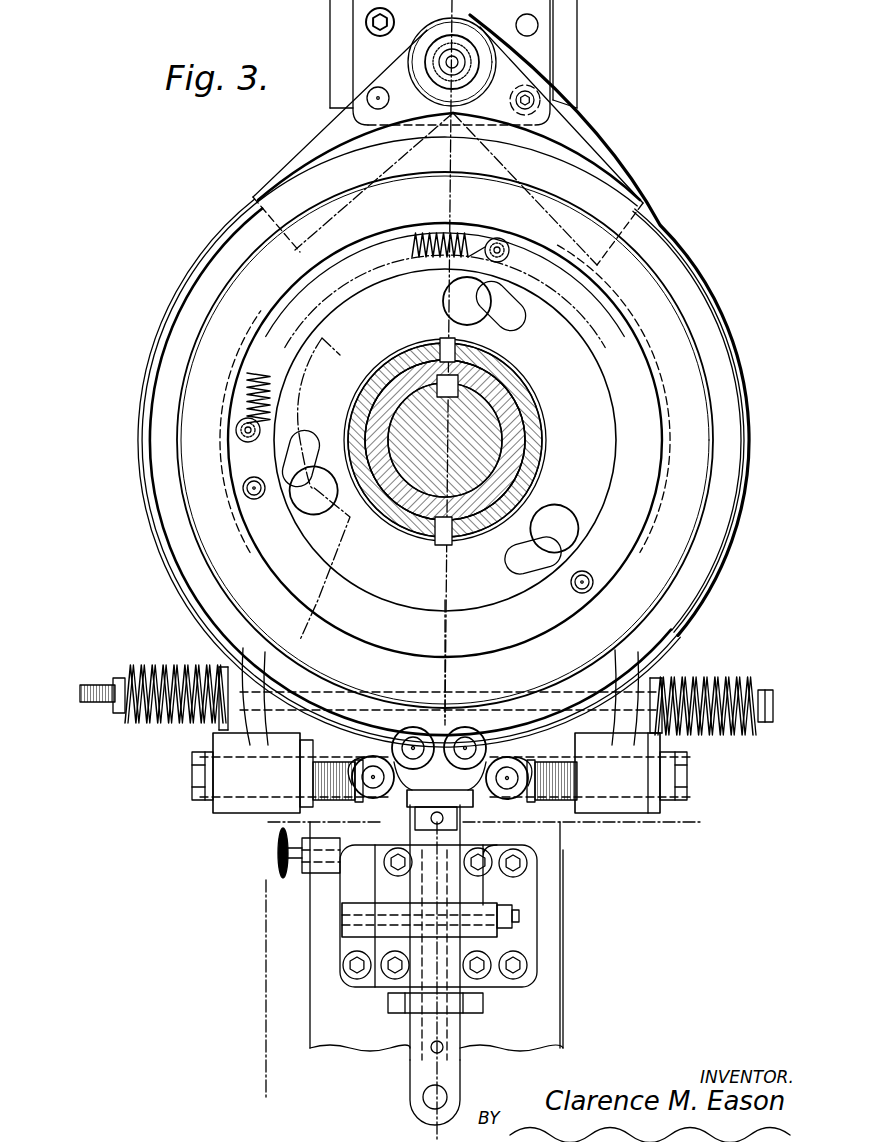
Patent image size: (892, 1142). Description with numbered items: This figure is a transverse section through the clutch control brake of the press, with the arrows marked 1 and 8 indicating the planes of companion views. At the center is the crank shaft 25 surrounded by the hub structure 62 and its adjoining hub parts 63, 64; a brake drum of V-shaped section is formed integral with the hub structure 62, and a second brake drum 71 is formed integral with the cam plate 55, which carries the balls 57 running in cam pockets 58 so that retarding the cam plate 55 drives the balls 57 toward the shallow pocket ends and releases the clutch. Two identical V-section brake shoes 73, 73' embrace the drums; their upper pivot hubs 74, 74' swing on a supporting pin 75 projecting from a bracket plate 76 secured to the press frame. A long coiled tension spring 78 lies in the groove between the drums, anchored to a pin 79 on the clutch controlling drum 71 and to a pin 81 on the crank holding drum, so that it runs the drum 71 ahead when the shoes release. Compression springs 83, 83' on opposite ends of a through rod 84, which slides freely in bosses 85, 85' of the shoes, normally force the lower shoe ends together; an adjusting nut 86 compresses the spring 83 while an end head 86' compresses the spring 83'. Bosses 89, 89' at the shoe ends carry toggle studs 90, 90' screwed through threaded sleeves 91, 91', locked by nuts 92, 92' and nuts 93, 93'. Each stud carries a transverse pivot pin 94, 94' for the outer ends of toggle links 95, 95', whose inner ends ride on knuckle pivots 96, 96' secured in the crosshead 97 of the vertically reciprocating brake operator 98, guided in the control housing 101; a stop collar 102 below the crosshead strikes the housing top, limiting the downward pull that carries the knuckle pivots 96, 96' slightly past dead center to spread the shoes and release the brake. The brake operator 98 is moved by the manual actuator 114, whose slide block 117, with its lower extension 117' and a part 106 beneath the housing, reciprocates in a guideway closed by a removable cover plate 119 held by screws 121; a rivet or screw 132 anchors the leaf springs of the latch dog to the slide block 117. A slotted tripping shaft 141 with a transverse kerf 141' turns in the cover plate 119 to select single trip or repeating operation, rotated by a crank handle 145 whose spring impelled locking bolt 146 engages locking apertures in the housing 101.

The section line 1 is at (446, 7).
The section line 8 is at (452, 680).
The shaft 25 is at (495, 426).
The cam plate 55 is at (580, 355).
The balls 57 is at (455, 298).
The cam pockets 58 is at (515, 325).
The hub structure 62 is at (520, 433).
The key 63 is at (420, 372).
The hub flange 64 is at (538, 467).
The brake drum 71 is at (205, 280).
The brake shoe 73 is at (409, 388).
The brake shoe 73' is at (601, 325).
The pivot hub 74 is at (421, 62).
The pivot hub 74' is at (564, 84).
The supporting pin 75 is at (456, 54).
The bracket plate 76 is at (578, 22).
The coiled tension spring 78 is at (432, 236).
The pin 79 is at (504, 242).
The pin 81 is at (240, 430).
The compression spring 83 is at (175, 674).
The compression spring 83' is at (712, 687).
The through rod 84 is at (87, 688).
The boss 85 is at (217, 696).
The boss 85' is at (668, 705).
The adjusting nut 86 is at (109, 717).
The end head 86' is at (789, 734).
The boss 89 is at (230, 829).
The boss 89' is at (646, 840).
The toggle stud 90 is at (270, 773).
The toggle stud 90' is at (617, 773).
The threaded sleeve 91 is at (318, 781).
The threaded sleeve 91' is at (576, 781).
The nut 92 is at (199, 826).
The nut 92' is at (685, 831).
The nut 93 is at (179, 776).
The nut 93' is at (698, 778).
The transverse pivot pin 94 is at (375, 792).
The transverse pivot pin 94' is at (500, 793).
The toggle links 95 is at (368, 768).
The toggle links 95' is at (513, 768).
The knuckle pivot 96 is at (408, 740).
The knuckle pivot 96' is at (495, 730).
The crosshead portion 97 is at (482, 747).
The brake operator 98 is at (458, 784).
The control housing 101 is at (565, 857).
The stop collar 102 is at (407, 796).
The nut 106 is at (395, 1010).
The manual actuator 114 is at (408, 833).
The slide block 117 is at (487, 932).
The rod end 117' is at (410, 1092).
The cover plate 119 is at (493, 947).
The screws 121 is at (478, 977).
The rivet or screw 132 is at (445, 1046).
The tripping shaft 141 is at (438, 924).
The kerf 141' is at (512, 904).
The crank handle 145 is at (307, 878).
The locking bolt 146 is at (280, 877).